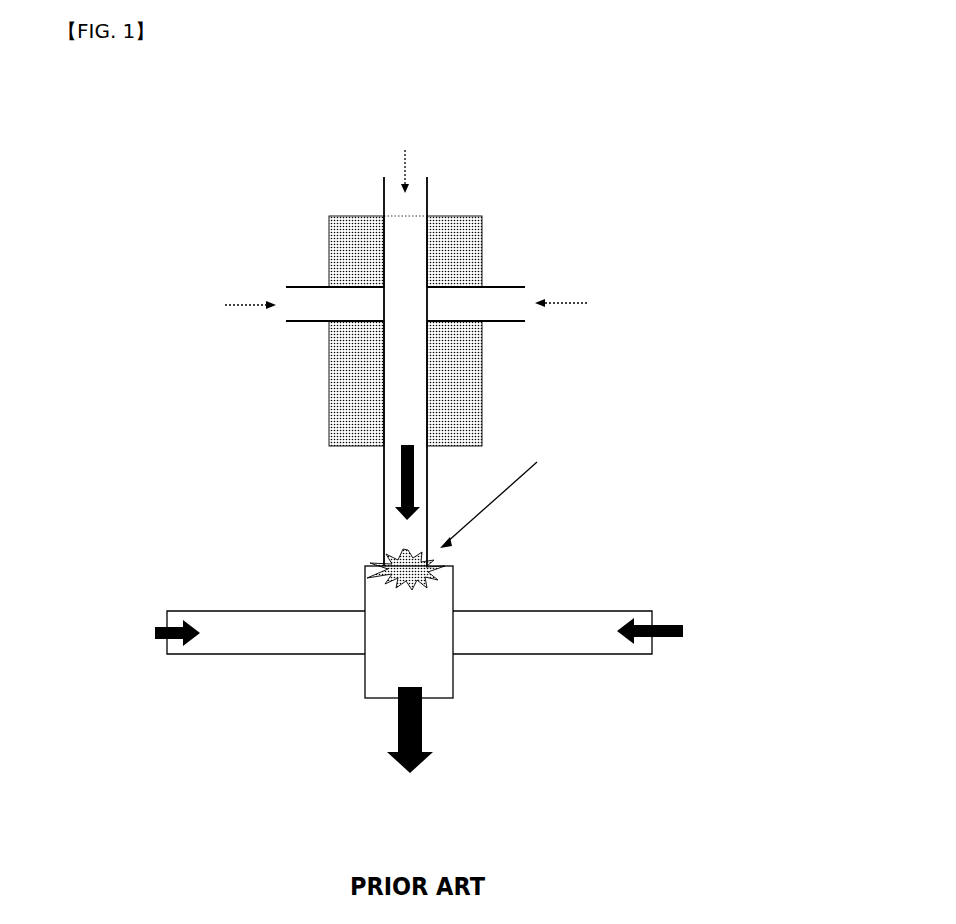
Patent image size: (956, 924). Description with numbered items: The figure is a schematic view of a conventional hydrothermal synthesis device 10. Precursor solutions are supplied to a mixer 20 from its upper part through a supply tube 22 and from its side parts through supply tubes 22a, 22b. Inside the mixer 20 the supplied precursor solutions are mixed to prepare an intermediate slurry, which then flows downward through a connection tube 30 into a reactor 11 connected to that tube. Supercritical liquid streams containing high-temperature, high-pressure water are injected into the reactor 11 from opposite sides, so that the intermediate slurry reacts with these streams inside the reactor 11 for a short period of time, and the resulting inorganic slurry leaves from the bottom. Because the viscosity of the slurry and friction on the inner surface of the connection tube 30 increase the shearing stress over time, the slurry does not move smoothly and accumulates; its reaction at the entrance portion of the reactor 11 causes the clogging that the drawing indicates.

The conventional hydrothermal synthesis device 10 is at (118, 176).
The supply tube 22 is at (384, 197).
The supply tube 22a is at (305, 287).
The supply tube 22b is at (505, 287).
The mixer 20 is at (330, 420).
The connection tube 30 is at (384, 512).
The reactor 11 is at (363, 585).